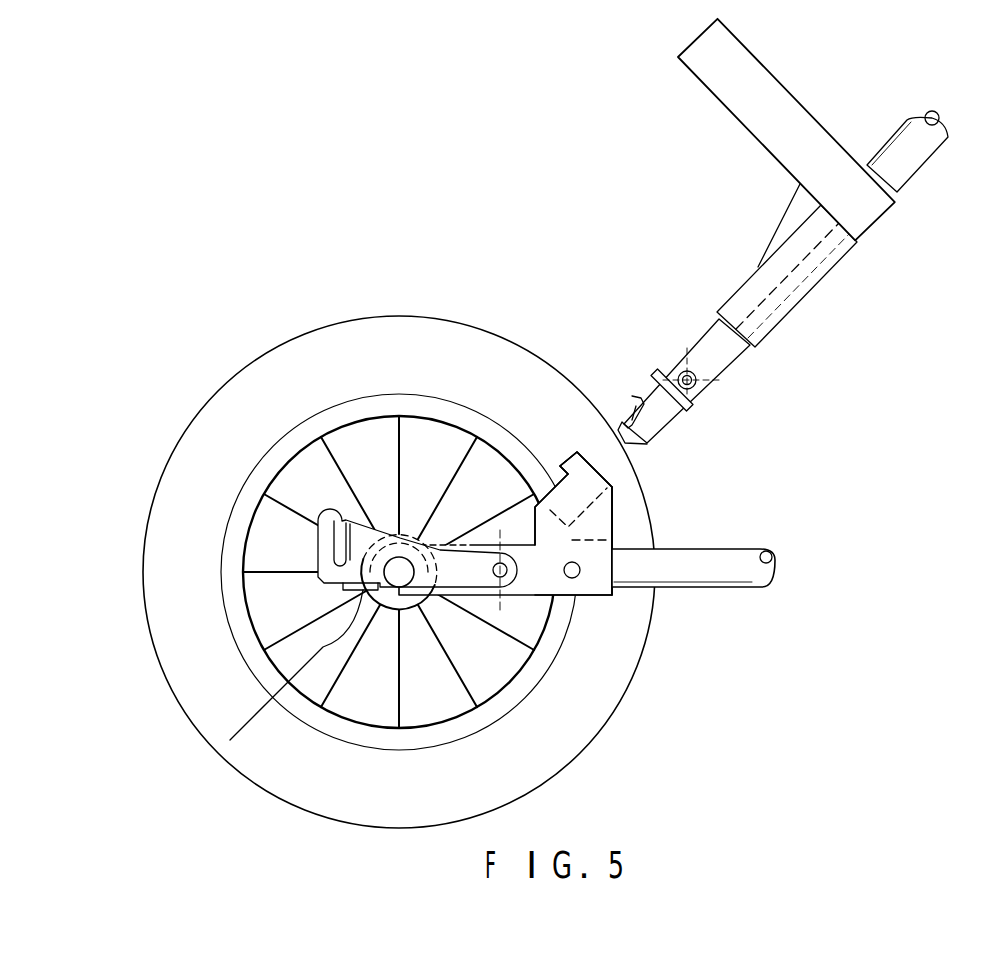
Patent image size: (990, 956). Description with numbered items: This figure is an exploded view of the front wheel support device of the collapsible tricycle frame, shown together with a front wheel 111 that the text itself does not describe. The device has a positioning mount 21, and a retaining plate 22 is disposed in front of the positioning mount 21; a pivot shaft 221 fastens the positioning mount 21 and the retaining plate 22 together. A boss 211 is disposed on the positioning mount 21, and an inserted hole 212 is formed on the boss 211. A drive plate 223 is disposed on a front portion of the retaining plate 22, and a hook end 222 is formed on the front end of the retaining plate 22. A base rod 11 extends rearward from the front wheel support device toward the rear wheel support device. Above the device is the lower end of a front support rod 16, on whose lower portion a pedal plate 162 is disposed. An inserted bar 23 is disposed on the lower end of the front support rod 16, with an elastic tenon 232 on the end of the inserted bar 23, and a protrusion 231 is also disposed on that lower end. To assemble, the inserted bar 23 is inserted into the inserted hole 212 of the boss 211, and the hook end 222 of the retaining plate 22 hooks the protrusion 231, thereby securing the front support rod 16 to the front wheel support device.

The base rod 11 is at (673, 568).
The front support rod 16 is at (918, 157).
The pedal plate 162 is at (842, 176).
The positioning mount 21 is at (597, 597).
The boss 211 is at (640, 529).
The inserted hole 212 is at (563, 478).
The retaining plate 22 is at (465, 580).
The pivot shaft 221 is at (507, 582).
The hook end 222 is at (347, 532).
The drive plate 223 is at (230, 740).
The inserted bar 23 is at (655, 418).
The protrusion 231 is at (700, 389).
The elastic tenon 232 is at (637, 399).
The tire 111 is at (150, 628).